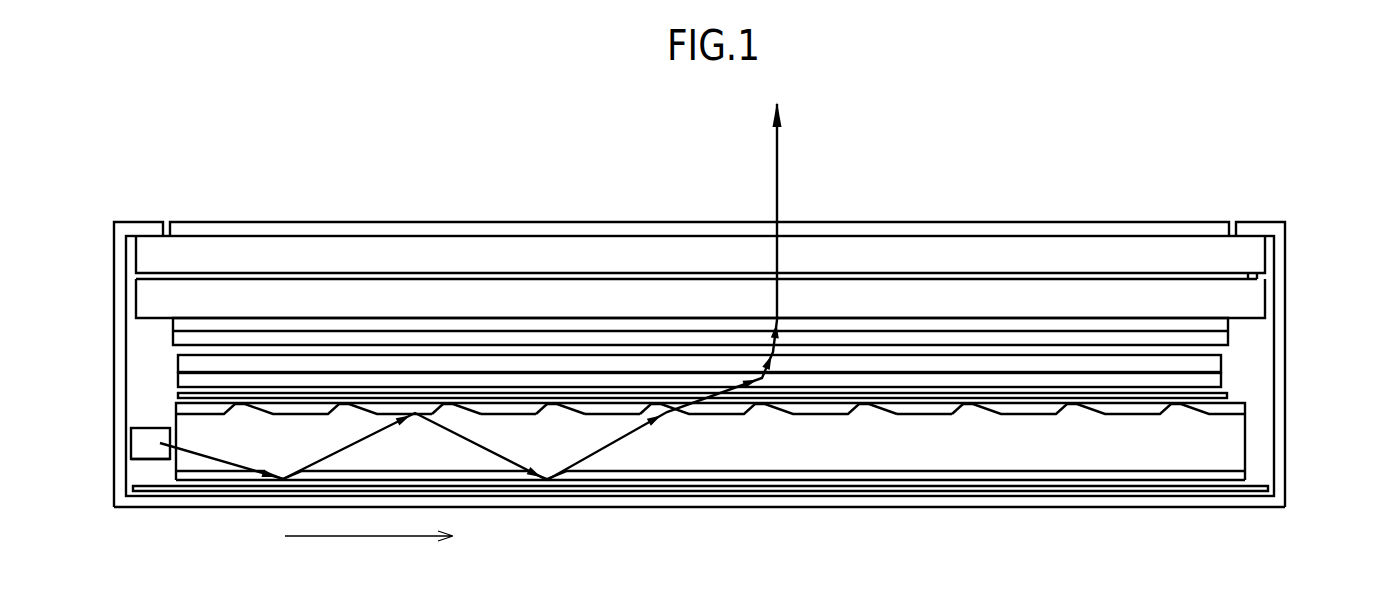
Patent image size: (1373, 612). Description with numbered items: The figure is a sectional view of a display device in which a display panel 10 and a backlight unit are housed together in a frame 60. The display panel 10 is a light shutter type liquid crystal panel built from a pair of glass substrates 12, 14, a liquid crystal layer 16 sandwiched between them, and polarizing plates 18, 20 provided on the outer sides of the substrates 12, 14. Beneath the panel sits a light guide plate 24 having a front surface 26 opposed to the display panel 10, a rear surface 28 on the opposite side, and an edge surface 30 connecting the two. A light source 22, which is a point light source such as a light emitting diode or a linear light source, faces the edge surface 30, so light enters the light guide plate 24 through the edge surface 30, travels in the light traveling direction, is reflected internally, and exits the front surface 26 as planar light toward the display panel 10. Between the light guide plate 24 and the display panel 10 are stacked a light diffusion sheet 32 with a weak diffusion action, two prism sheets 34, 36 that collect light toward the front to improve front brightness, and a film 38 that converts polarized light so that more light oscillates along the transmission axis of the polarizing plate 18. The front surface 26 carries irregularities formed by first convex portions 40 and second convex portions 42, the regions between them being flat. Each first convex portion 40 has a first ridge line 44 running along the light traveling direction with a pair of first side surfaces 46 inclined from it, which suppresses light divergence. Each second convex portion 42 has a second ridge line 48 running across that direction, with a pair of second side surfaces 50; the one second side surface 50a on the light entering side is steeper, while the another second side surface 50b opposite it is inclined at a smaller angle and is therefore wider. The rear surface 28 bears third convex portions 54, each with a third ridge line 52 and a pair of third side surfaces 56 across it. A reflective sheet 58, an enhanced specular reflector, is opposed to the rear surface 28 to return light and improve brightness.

The display panel 10 is at (1153, 218).
The substrate 12 is at (1250, 277).
The substrate 14 is at (1287, 233).
The liquid crystal layer 16 is at (1258, 255).
The polarizing plate 18 is at (1255, 297).
The polarizing plate 20 is at (1212, 230).
The light source 22 is at (143, 459).
The light guide plate 24 is at (1228, 392).
The front surface 26 is at (1247, 443).
The rear surface 28 is at (1213, 481).
The edge surface 30 is at (173, 463).
The light diffusion sheet 32 is at (1212, 376).
The prism sheet 34 is at (1222, 362).
The prism sheet 36 is at (1220, 338).
The film 38 is at (1218, 325).
The first convex portion 40 is at (900, 397).
The second convex portion 42 is at (566, 398).
The first ridge line 44 is at (612, 398).
The first side surface 46 is at (944, 400).
The second ridge line 48 is at (545, 400).
The second side surface 50 is at (455, 175).
The one second side surface 50a is at (425, 399).
The another second side surface 50b is at (456, 399).
The third ridge line 52 is at (750, 481).
The third convex portion 54 is at (1240, 476).
The third side surface 56 is at (848, 472).
The reflective sheet 58 is at (680, 492).
The frame 60 is at (567, 508).